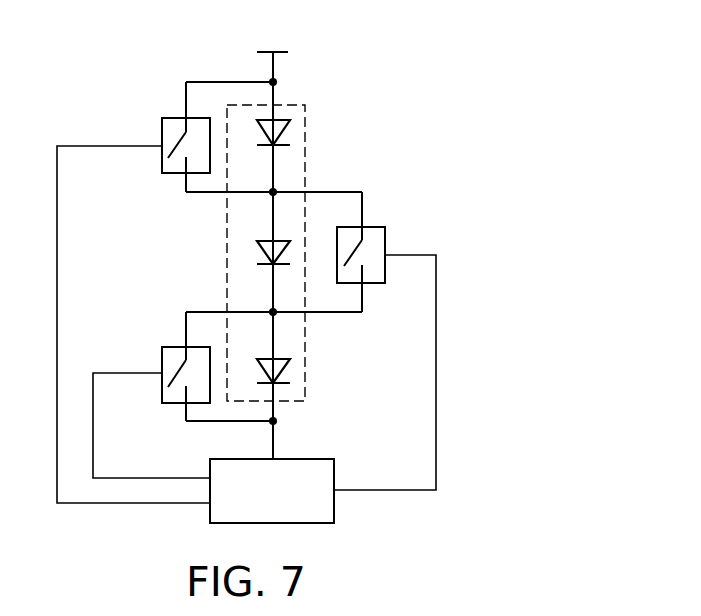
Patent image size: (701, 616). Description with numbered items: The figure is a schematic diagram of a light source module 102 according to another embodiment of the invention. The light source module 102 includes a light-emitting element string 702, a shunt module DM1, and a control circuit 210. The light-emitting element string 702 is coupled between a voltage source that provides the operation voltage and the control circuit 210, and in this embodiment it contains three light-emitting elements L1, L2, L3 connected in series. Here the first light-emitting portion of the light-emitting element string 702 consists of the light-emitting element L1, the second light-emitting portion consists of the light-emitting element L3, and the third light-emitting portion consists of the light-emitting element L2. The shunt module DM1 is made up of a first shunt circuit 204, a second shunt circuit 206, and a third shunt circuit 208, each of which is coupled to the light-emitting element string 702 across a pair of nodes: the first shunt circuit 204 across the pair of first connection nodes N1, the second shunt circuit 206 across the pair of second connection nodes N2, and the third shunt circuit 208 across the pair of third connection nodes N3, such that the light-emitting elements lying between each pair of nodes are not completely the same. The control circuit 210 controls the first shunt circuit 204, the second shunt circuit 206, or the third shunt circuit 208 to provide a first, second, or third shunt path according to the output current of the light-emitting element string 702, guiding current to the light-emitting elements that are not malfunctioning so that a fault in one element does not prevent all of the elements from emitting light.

The light source module 102 is at (336, 285).
The first shunt circuit 204 is at (162, 128).
The second shunt circuit 206 is at (170, 347).
The third shunt circuit 208 is at (385, 226).
The control circuit 210 is at (334, 506).
The light-emitting element string 702 is at (316, 250).
The first connection nodes N1 is at (273, 192).
The second connection nodes N2 is at (273, 312).
The third connection nodes N3 is at (273, 312).
The light-emitting element L1 is at (261, 135).
The light-emitting element L2 is at (261, 253).
The light-emitting element L3 is at (261, 373).
The shunt module DM1 is at (563, 109).